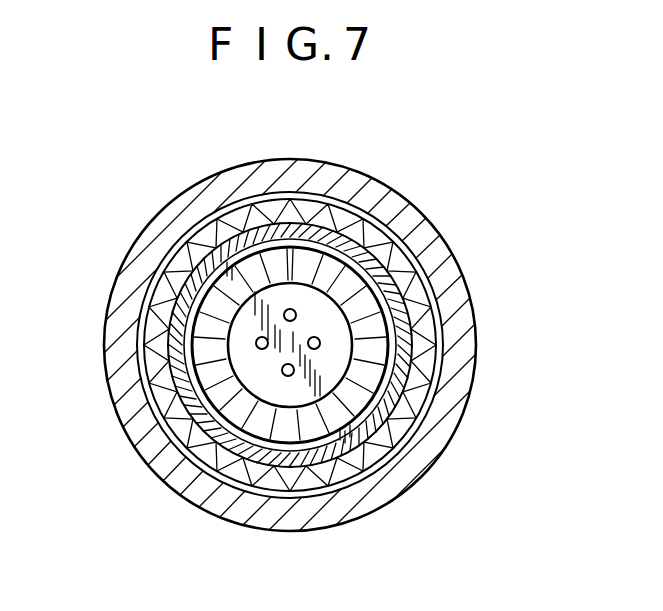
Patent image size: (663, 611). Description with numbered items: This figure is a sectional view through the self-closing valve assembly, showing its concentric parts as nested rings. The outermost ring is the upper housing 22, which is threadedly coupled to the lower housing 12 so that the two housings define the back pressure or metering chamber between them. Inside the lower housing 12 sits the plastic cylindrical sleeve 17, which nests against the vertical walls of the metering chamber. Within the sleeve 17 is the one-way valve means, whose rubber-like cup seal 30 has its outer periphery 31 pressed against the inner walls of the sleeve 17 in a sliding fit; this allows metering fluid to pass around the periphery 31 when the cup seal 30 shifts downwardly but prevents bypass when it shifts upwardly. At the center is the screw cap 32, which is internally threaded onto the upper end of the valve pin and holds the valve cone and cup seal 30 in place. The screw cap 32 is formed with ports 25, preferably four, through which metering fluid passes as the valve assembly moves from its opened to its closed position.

The lower housing 12 is at (355, 458).
The plastic cylindrical sleeve 17 is at (397, 373).
The upper housing 22 is at (458, 322).
The ports 25 is at (253, 403).
The cup seal 30 is at (208, 327).
The outer periphery of cup seal 31 is at (382, 305).
The screw cap 32 is at (353, 275).